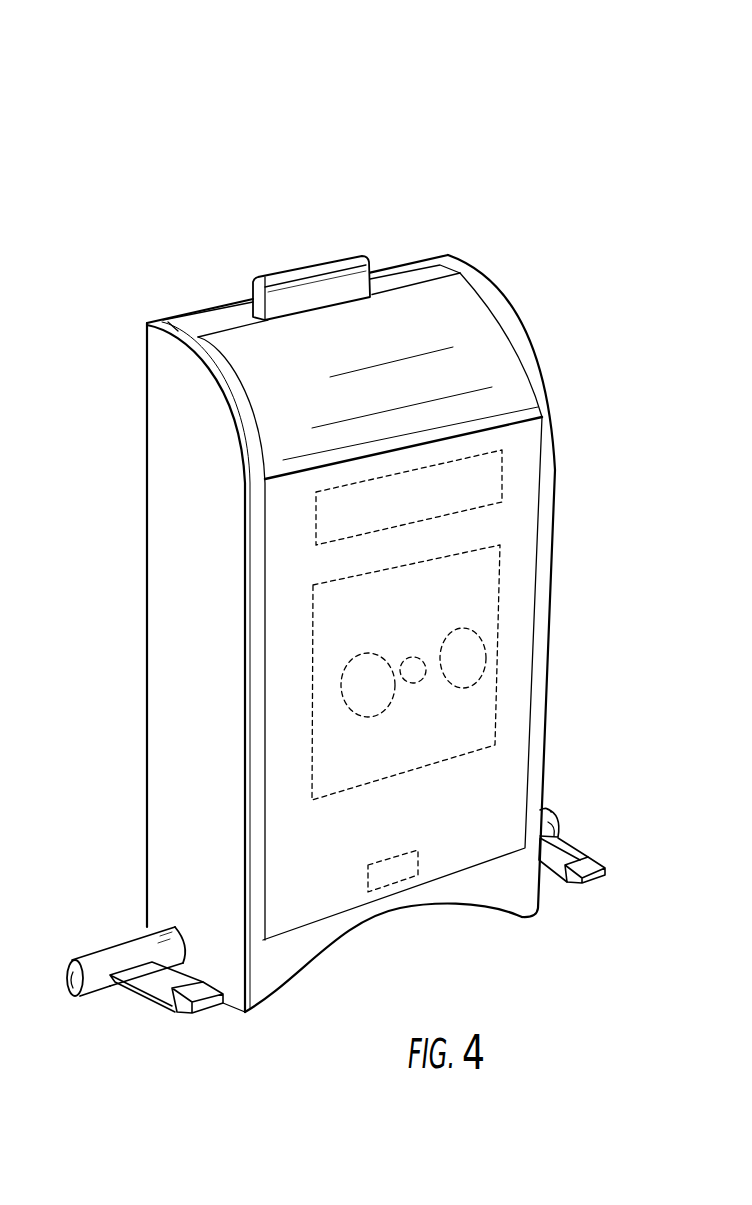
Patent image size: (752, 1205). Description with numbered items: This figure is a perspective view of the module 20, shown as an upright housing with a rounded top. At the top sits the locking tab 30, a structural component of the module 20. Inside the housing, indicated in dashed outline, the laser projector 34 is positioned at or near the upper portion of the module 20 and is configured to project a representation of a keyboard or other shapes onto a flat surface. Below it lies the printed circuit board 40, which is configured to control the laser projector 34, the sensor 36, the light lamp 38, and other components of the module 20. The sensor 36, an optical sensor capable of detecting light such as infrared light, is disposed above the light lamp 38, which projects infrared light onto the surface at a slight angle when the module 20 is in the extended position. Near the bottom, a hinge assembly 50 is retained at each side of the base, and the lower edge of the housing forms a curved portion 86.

The module 20 is at (170, 419).
The locking tab 30 is at (308, 277).
The laser projector 34 is at (490, 478).
The printed circuit board 40 is at (488, 600).
The sensor 36 is at (387, 702).
The light lamp 38 is at (418, 860).
The hinge assembly 50 is at (110, 947).
The curved portion 86 is at (342, 936).